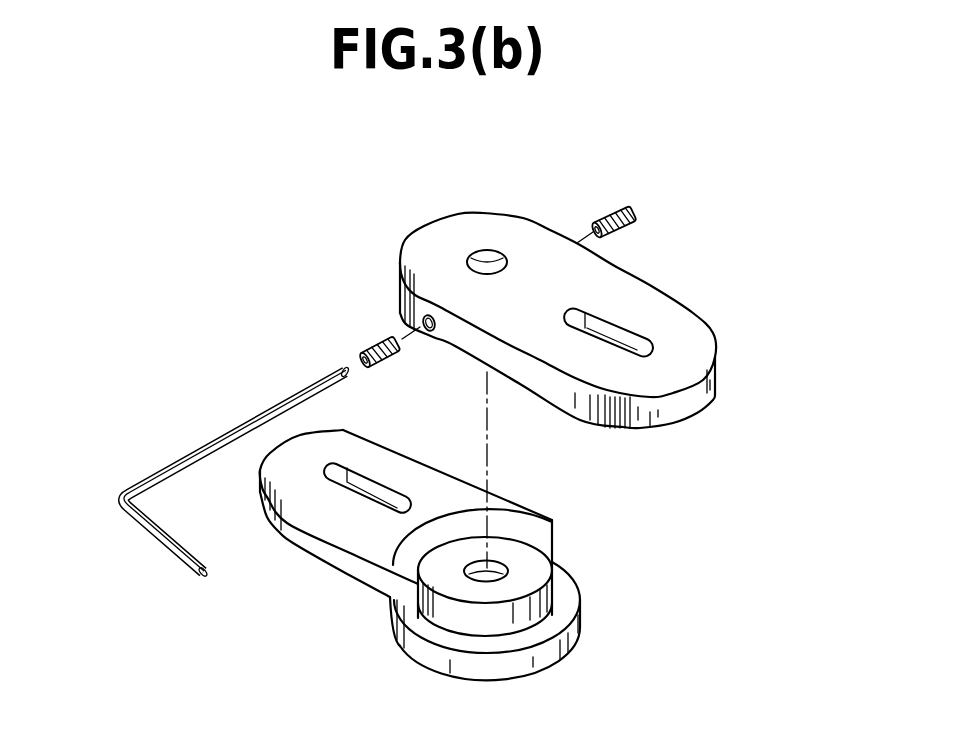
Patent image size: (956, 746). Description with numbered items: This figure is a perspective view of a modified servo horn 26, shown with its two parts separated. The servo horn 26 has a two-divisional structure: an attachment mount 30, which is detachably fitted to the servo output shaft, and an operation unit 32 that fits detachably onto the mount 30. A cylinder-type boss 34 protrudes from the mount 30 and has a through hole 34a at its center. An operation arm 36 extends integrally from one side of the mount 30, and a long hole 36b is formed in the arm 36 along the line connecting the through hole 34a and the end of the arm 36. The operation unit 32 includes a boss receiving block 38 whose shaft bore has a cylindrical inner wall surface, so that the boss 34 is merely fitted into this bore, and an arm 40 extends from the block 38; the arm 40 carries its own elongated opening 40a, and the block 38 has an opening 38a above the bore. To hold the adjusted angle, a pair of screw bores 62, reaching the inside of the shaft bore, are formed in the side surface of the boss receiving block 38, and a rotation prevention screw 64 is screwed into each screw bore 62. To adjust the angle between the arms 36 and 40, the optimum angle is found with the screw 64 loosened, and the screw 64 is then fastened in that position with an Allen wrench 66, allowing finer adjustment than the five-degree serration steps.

The servo horn 26 is at (752, 185).
The attachment mount 30 is at (399, 657).
The operation unit 32 is at (554, 212).
The boss 34 is at (543, 607).
The through hole 34a is at (500, 566).
The operation arm 36 is at (328, 545).
The long hole 36b is at (377, 481).
The boss receiving block 38 is at (397, 295).
The hole in upper plate 38a is at (485, 251).
The arm 40 is at (660, 410).
The slot of upper plate 40a is at (626, 328).
The screw bore 62 is at (422, 322).
The rotation prevention screw 64 is at (611, 208).
The hex wrench 66 is at (236, 428).